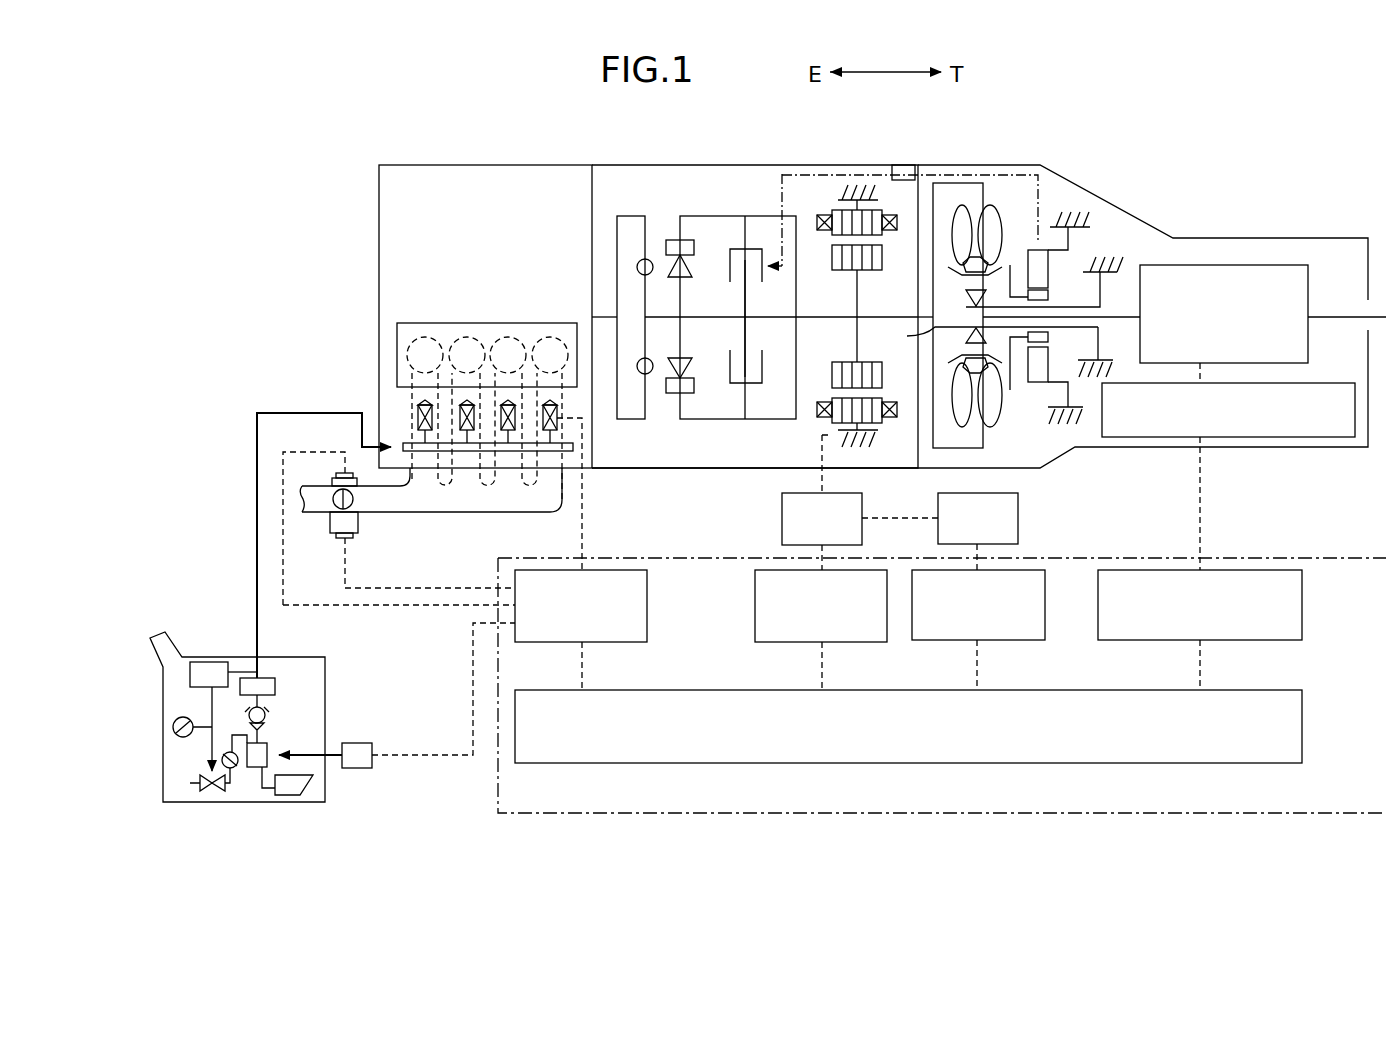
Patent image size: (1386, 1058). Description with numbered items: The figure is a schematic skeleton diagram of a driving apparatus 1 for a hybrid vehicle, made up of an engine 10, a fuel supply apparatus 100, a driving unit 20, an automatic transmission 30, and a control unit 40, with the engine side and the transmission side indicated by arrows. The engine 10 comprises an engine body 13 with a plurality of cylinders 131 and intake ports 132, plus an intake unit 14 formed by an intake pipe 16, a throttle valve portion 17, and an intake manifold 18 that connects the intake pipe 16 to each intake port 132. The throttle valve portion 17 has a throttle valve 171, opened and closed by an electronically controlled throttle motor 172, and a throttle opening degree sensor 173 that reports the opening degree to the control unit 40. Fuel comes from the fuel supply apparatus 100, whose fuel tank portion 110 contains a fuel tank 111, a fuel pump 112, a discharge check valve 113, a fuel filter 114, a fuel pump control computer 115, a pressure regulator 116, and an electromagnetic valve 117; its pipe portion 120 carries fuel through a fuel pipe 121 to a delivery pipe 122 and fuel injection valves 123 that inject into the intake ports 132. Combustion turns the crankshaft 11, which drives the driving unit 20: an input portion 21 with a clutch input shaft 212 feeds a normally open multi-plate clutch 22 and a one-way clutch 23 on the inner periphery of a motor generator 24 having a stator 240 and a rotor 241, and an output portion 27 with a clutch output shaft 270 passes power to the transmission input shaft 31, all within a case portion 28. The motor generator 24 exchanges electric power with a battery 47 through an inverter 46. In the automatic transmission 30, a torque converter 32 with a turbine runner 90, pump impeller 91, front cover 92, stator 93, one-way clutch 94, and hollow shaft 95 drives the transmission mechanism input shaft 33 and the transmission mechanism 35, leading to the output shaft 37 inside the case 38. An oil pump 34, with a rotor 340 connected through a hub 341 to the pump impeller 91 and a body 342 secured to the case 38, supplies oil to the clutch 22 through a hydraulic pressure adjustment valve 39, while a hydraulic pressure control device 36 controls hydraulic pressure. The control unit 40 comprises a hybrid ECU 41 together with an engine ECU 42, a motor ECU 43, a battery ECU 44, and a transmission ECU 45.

The driving apparatus 1 is at (1220, 86).
The engine 10 is at (438, 146).
The crankshaft 11 is at (592, 313).
The engine body 13 is at (403, 315).
The intake unit 14 is at (320, 438).
The intake pipe 16 is at (316, 518).
The throttle valve portion 17 is at (462, 546).
The intake manifold 18 is at (562, 495).
The driving unit 20 is at (761, 151).
The input portion 21 is at (628, 214).
The clutch 22 is at (730, 266).
The one-way clutch 23 is at (668, 240).
The motor generator 24 is at (821, 205).
The output portion 27 is at (871, 329).
The case portion 28 is at (703, 470).
The automatic transmission 30 is at (1039, 151).
The transmission input shaft 31 is at (924, 314).
The torque converter 32 is at (1007, 434).
The transmission mechanism input shaft 33 is at (1112, 312).
The oil pump 34 is at (1066, 260).
The transmission mechanism 35 is at (1206, 265).
The hydraulic pressure control device 36 is at (1250, 438).
The output shaft 37 is at (1350, 315).
The case 38 is at (1065, 456).
The hydraulic pressure adjustment valve 39 is at (892, 172).
The control unit 40 is at (942, 813).
The hybrid electronic control unit 41 is at (1210, 764).
The engine electronic control unit 42 is at (647, 607).
The motor electronic control unit 43 is at (852, 642).
The battery electronic control unit 44 is at (1010, 640).
The transmission electronic control unit 45 is at (1252, 640).
The inverter 46 is at (862, 500).
The battery 47 is at (1018, 522).
The turbine runner 90 is at (955, 220).
The pump impeller 91 is at (1001, 222).
The front cover 92 is at (922, 190).
The stator 93 is at (1010, 265).
The one-way clutch 94 is at (991, 336).
The hollow shaft 95 is at (1093, 325).
The fuel supply apparatus 100 is at (208, 396).
The fuel tank portion 110 is at (340, 794).
The fuel tank 111 is at (258, 803).
The fuel pump 112 is at (270, 745).
The discharge check valve 113 is at (267, 710).
The fuel filter 114 is at (267, 678).
The fuel pump control computer 115 is at (372, 768).
The pressure regulator 116 is at (218, 662).
The electromagnetic valve 117 is at (212, 803).
The pipe portion 120 is at (246, 528).
The fuel pipe 121 is at (257, 560).
The delivery pipe 122 is at (468, 453).
The fuel injection valves 123 is at (560, 409).
The cylinders 131 is at (408, 350).
The intake ports 132 is at (420, 400).
The throttle valve 171 is at (355, 515).
The throttle motor 172 is at (360, 537).
The throttle opening degree sensor 173 is at (332, 481).
The clutch input shaft 212 is at (655, 317).
The stator 240 is at (817, 425).
The rotor 241 is at (845, 272).
The clutch output shaft 270 is at (880, 316).
The rotor 340 is at (1048, 340).
The hub 341 is at (1011, 390).
The body 342 is at (1048, 274).